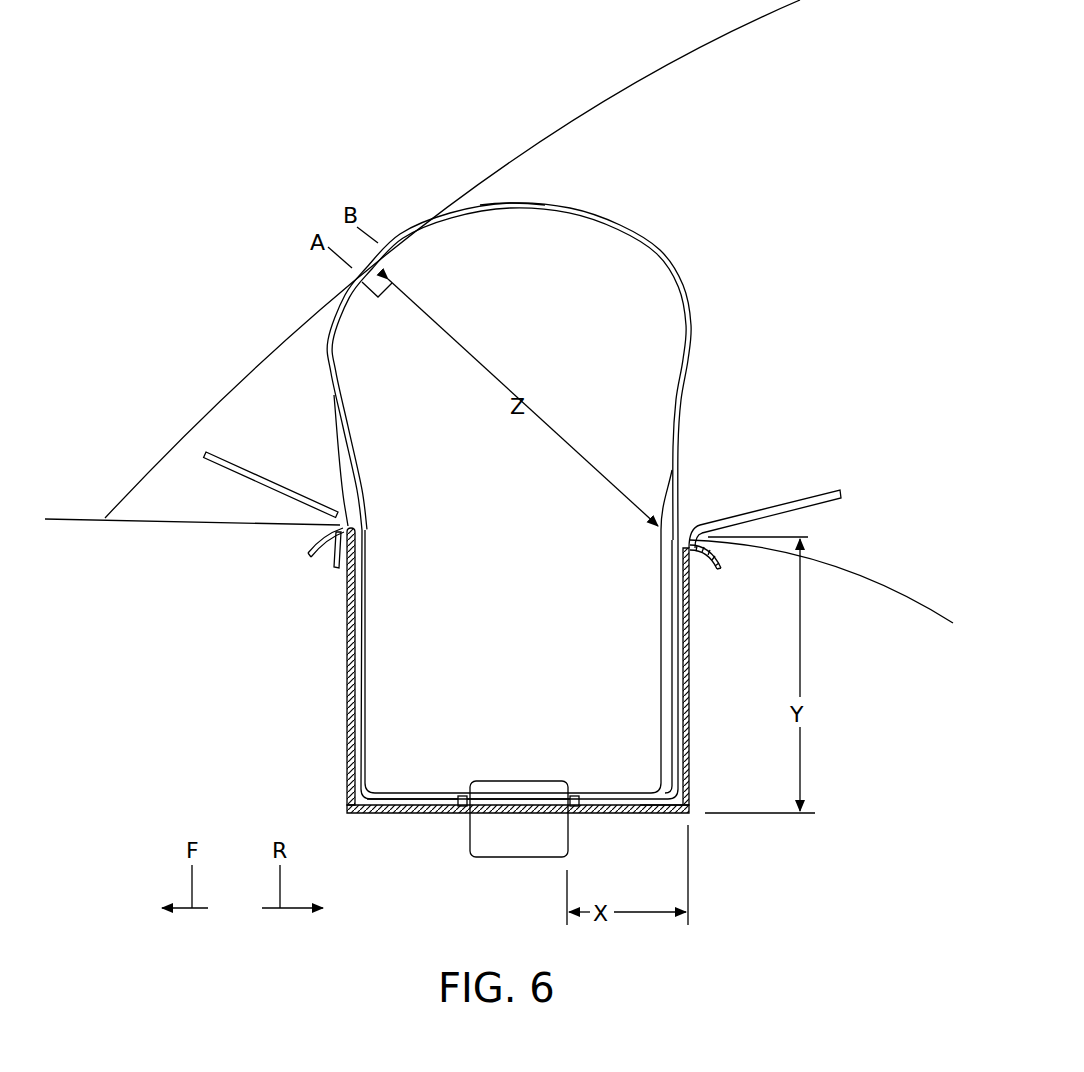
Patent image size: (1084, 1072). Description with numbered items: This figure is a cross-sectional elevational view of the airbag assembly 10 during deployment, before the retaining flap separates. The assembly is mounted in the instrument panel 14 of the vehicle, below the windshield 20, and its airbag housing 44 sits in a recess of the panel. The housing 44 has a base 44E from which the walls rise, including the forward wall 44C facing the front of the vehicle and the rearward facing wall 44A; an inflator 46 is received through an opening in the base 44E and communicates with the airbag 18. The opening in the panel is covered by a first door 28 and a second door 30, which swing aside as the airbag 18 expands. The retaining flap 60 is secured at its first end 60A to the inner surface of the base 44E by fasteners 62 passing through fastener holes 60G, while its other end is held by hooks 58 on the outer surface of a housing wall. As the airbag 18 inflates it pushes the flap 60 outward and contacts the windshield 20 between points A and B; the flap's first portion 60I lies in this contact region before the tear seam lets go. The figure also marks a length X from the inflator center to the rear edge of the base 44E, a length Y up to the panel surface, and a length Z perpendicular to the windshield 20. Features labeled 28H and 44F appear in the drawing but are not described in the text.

The airbag assembly 10 is at (773, 346).
The instrument panel 14 is at (137, 523).
The airbag 18 is at (350, 464).
The windshield 20 is at (231, 392).
The first door 28 is at (227, 473).
The chute corner 28H is at (397, 250).
The second door 30 is at (825, 498).
The airbag housing 44 is at (517, 705).
The rearward facing wall 44A is at (690, 660).
The forward wall 44C is at (347, 627).
The base 44E is at (612, 815).
The housing interior 44F is at (640, 805).
The inflator 46 is at (470, 833).
The hooks 58 is at (308, 548).
The retaining flap 60 is at (670, 251).
The first end 60A is at (457, 803).
The fastener holes 60G is at (475, 803).
The first portion 60I is at (515, 204).
The fasteners 62 is at (462, 795).